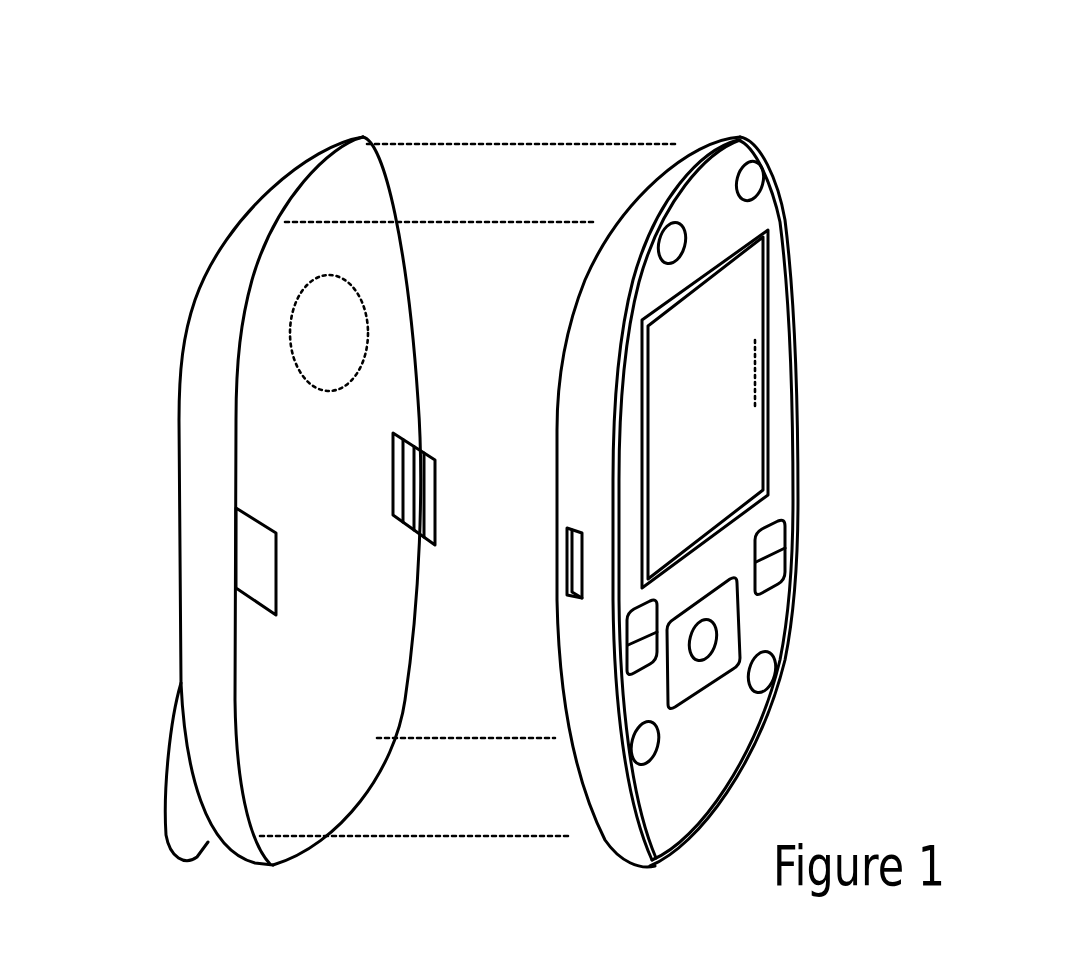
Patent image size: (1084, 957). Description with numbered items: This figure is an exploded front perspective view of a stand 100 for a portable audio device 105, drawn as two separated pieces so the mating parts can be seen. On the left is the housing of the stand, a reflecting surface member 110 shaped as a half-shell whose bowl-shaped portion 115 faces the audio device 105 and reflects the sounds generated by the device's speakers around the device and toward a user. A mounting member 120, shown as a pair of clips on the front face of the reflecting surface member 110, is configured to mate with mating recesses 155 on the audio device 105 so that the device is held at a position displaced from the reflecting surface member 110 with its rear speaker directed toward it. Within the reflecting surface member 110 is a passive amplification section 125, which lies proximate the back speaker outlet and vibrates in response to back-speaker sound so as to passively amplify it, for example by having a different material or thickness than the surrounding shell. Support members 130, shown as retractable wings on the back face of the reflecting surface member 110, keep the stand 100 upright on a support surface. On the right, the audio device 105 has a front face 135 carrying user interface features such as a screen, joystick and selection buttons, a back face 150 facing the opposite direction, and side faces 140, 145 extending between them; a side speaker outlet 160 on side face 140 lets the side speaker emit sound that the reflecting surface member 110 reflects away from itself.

The stand 100 is at (173, 150).
The portable audio device 105 is at (748, 100).
The reflecting surface member 110 is at (297, 153).
The bowl-shaped portion 115 is at (300, 778).
The mounting member 120 is at (253, 557).
The passive amplification section 125 is at (290, 340).
The support members 130 is at (182, 822).
The front face 135 is at (728, 447).
The side face 140 is at (787, 197).
The side face 145 is at (590, 778).
The back face 150 is at (620, 190).
The mating recesses 155 is at (767, 340).
The side speaker outlet 160 is at (802, 530).